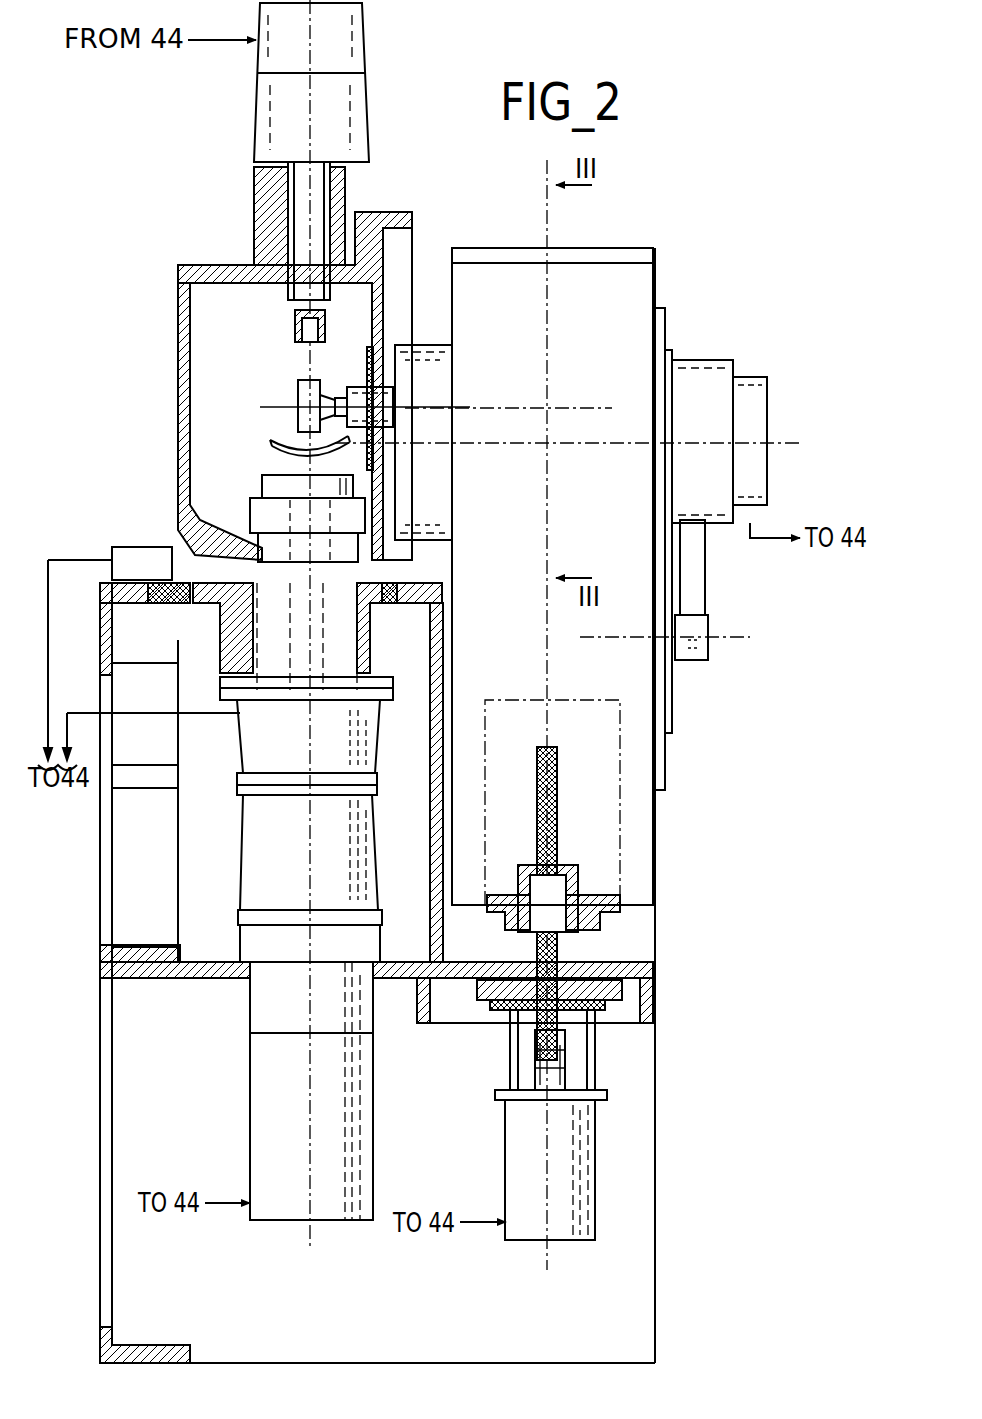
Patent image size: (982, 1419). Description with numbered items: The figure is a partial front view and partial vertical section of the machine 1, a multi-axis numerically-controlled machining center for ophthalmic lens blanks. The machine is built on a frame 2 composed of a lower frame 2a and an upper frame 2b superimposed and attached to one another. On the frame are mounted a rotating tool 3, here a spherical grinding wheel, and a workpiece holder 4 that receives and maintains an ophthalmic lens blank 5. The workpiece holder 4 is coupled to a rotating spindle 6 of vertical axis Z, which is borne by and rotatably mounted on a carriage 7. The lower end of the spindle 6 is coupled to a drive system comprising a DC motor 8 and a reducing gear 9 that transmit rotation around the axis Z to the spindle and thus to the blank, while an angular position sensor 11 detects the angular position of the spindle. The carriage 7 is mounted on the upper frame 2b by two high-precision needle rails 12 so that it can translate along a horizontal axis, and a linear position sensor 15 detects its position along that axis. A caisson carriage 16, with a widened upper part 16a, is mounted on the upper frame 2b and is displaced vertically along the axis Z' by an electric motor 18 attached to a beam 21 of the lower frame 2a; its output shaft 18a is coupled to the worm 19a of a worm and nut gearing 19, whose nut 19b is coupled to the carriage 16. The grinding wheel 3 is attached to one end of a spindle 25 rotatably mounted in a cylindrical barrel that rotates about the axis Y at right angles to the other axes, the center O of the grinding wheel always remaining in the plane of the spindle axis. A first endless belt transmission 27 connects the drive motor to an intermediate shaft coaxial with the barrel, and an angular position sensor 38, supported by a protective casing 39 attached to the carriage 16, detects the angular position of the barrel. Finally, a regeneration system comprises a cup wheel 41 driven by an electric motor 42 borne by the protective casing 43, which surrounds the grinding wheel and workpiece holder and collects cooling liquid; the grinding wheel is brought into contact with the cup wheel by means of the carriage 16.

The machine 1 is at (105, 205).
The frame 2 is at (660, 1180).
The lower frame 2a is at (100, 1198).
The upper frame 2b is at (100, 890).
The rotating tool 3 is at (298, 392).
The workpiece holder 4 is at (262, 485).
The ophthalmic lens blank 5 is at (275, 445).
The rotating spindle 6 is at (270, 525).
The carriage 7 is at (190, 583).
The DC motor 8 is at (250, 1120).
The reducing gear 9 is at (243, 860).
The angular position sensor 11 is at (245, 760).
The needle rails 12 is at (405, 575).
The linear position sensor 15 is at (130, 545).
The caisson carriage 16 is at (612, 515).
The widened upper part 16a is at (655, 276).
The electric motor 18 is at (592, 1212).
The output shaft 18a is at (540, 1088).
The worm and nut gearing 19 is at (618, 924).
The worm 19a is at (558, 760).
The nut 19b is at (578, 878).
The beam 21 is at (655, 988).
The spindle 25 is at (338, 396).
The first endless belt transmission 27 is at (700, 578).
The angular position sensor 38 is at (750, 377).
The protective casing 39 is at (700, 360).
The cup wheel 41 is at (295, 326).
The electric motor 42 is at (255, 140).
The protective casing 43 is at (230, 264).
The center of the grinding wheel O is at (298, 425).
The axis Z is at (254, 103).
The axis Z' is at (574, 337).
The axis Y is at (790, 443).